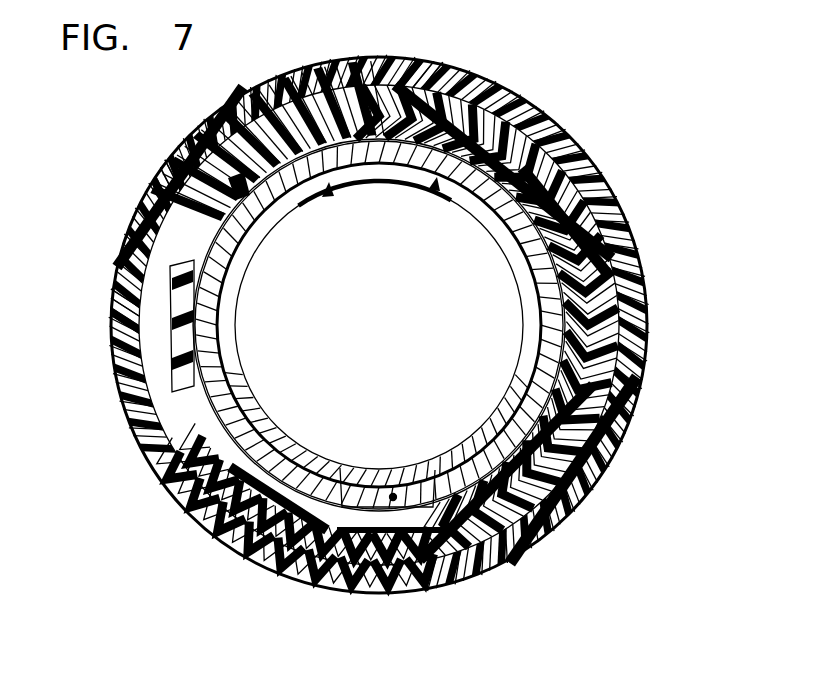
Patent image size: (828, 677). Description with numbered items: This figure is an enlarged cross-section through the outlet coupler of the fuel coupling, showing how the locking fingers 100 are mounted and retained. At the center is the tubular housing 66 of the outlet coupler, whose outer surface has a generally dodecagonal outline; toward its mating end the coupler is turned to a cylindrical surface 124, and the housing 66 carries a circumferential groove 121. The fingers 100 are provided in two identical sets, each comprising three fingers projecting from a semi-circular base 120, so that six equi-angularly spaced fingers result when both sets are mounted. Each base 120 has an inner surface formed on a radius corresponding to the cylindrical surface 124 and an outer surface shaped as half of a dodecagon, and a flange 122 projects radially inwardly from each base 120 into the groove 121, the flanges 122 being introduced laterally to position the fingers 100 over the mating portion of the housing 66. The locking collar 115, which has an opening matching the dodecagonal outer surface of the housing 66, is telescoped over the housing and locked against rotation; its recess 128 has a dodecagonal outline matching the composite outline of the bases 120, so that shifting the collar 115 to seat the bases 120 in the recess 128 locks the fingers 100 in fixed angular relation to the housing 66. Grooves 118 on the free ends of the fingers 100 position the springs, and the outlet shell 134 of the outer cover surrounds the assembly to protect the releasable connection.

The tubular housing 66 is at (377, 425).
The fingers 100 is at (177, 340).
The locking collar 115 is at (375, 317).
The grooves 118 is at (379, 323).
The semi-circular base 120 is at (405, 295).
The circumferential groove 121 is at (385, 454).
The flange 122 is at (394, 592).
The cylindrical surface 124 is at (375, 315).
The recess 128 is at (374, 325).
The outlet shell 134 is at (369, 325).